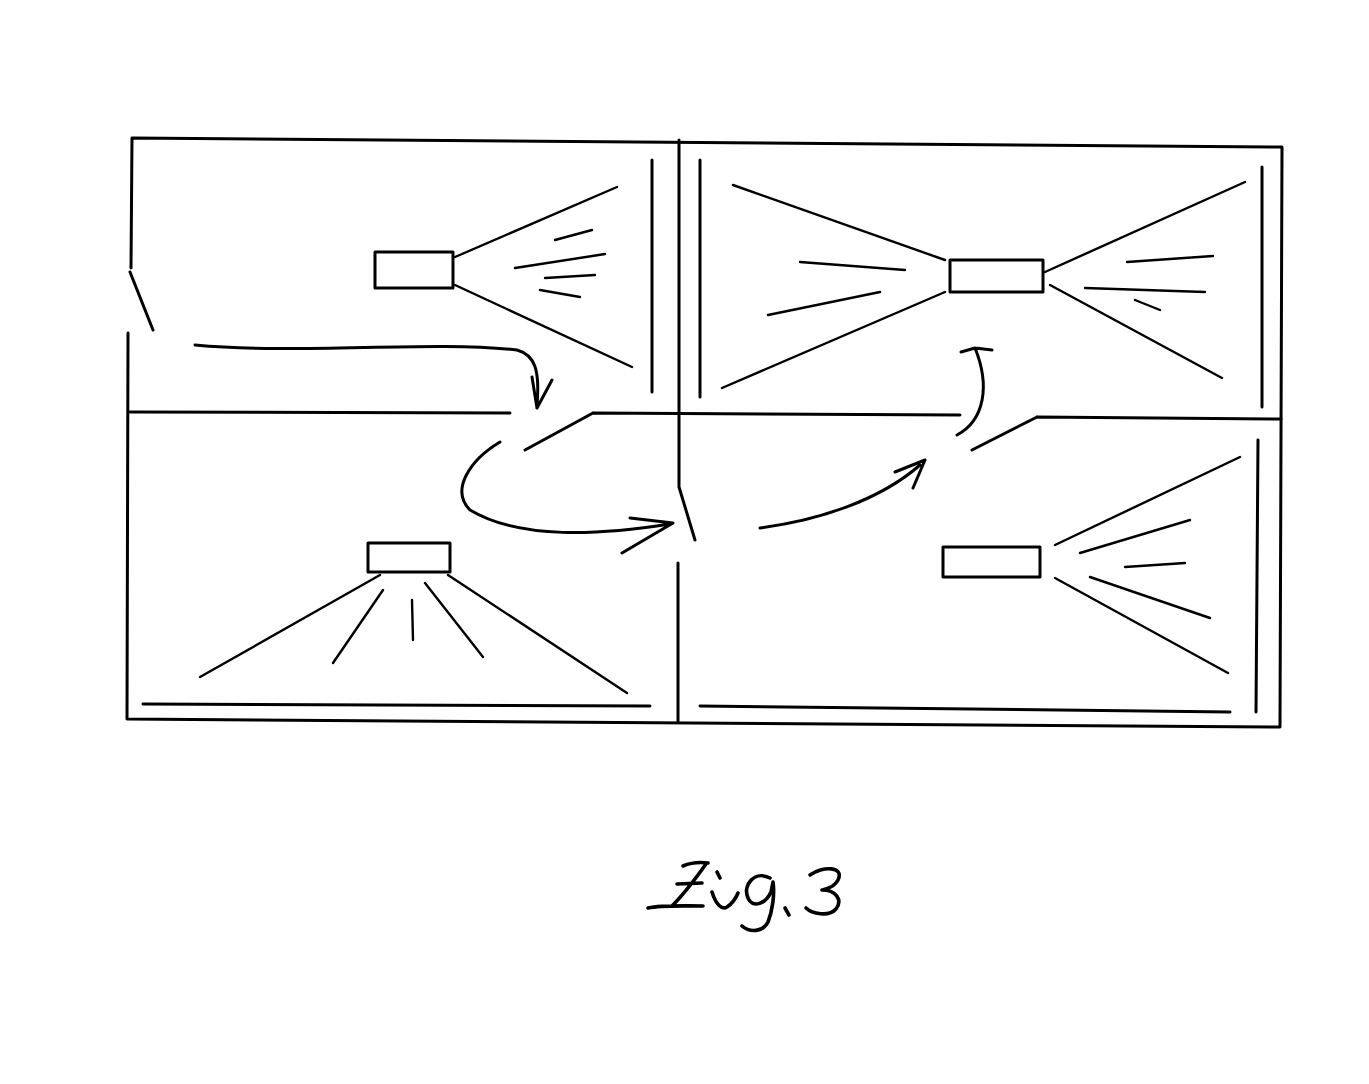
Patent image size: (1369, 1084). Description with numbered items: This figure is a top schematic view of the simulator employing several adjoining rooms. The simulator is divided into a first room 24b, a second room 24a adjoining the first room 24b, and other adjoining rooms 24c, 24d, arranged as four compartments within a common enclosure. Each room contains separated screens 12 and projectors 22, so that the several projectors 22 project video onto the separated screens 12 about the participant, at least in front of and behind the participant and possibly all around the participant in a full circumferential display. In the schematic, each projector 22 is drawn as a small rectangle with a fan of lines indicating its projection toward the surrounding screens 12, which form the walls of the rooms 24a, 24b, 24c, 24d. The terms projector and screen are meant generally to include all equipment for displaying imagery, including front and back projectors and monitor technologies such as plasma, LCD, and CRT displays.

The screen 12 is at (693, 168).
The projector 22 is at (413, 270).
The second room 24a is at (272, 155).
The first room 24b is at (130, 468).
The adjoining room 24c is at (860, 682).
The adjoining room 24d is at (903, 165).